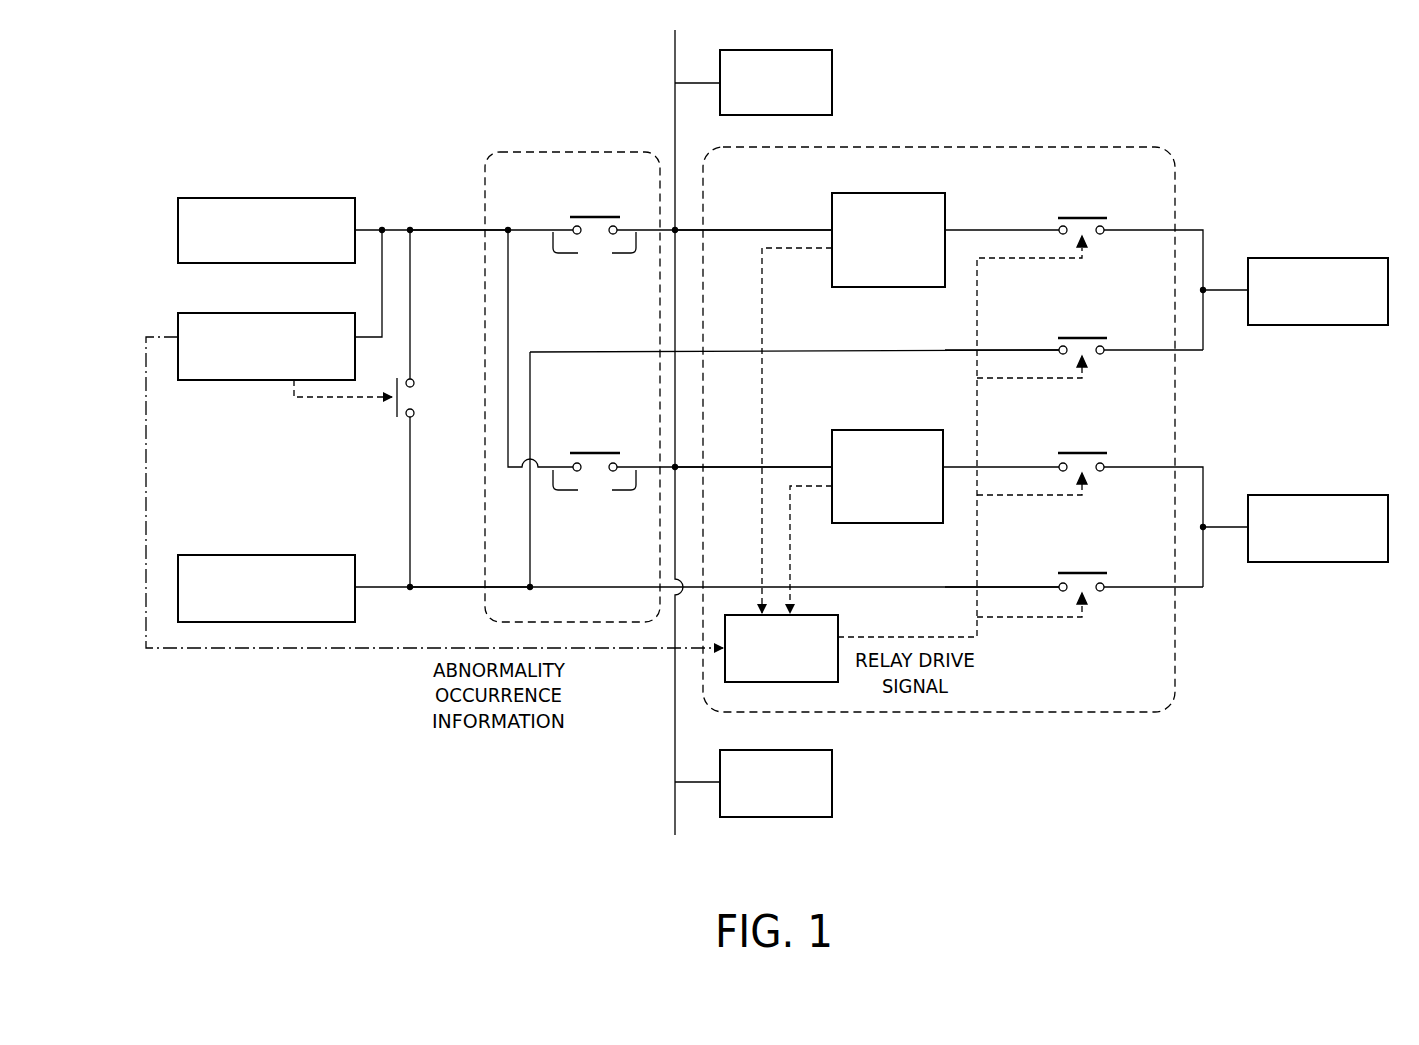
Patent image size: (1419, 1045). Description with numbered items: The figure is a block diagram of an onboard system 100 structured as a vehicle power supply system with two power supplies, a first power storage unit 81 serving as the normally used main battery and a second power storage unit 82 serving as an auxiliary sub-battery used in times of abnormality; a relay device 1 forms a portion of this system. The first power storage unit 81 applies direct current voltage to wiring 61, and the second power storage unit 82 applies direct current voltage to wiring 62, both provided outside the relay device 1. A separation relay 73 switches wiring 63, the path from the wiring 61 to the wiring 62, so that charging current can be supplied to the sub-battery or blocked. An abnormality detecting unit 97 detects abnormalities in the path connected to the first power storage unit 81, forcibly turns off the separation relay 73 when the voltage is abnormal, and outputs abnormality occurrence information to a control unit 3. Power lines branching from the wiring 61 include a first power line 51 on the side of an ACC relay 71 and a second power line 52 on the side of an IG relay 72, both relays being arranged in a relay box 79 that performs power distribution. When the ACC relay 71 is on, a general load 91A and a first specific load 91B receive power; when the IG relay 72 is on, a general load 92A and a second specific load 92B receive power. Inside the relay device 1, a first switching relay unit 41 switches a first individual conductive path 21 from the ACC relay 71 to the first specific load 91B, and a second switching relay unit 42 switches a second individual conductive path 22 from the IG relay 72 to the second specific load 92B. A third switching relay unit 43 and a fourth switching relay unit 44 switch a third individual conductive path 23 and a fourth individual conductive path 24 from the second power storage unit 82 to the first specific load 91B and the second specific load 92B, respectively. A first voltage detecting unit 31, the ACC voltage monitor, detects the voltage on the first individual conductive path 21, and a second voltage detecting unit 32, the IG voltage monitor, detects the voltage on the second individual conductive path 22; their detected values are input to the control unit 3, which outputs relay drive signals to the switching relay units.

The onboard system 100 is at (1225, 96).
The relay device 1 is at (980, 147).
The control unit 3 is at (838, 630).
The first individual conductive path 21 is at (805, 230).
The second individual conductive path 22 is at (793, 467).
The third individual conductive path 23 is at (1155, 350).
The fourth individual conductive path 24 is at (1157, 587).
The first voltage detecting unit 31 is at (918, 193).
The second voltage detecting unit 32 is at (867, 430).
The first switching relay unit 41 is at (1085, 217).
The second switching relay unit 42 is at (1090, 452).
The third switching relay unit 43 is at (1090, 337).
The fourth switching relay unit 44 is at (1090, 572).
The first power line 51 is at (594, 262).
The second power line 52 is at (594, 499).
The wiring 61 is at (436, 230).
The wiring 62 is at (455, 590).
The wiring 63 is at (410, 355).
The ACC relay 71 is at (595, 216).
The IG relay 72 is at (608, 452).
The separation relay 73 is at (395, 408).
The relay box 79 is at (543, 152).
The first power storage unit 81 is at (284, 198).
The second power storage unit 82 is at (275, 555).
The general load 91A is at (832, 58).
The first specific load 91B is at (1265, 258).
The general load 92A is at (832, 778).
The second specific load 92B is at (1265, 495).
The abnormality detecting unit 97 is at (275, 313).